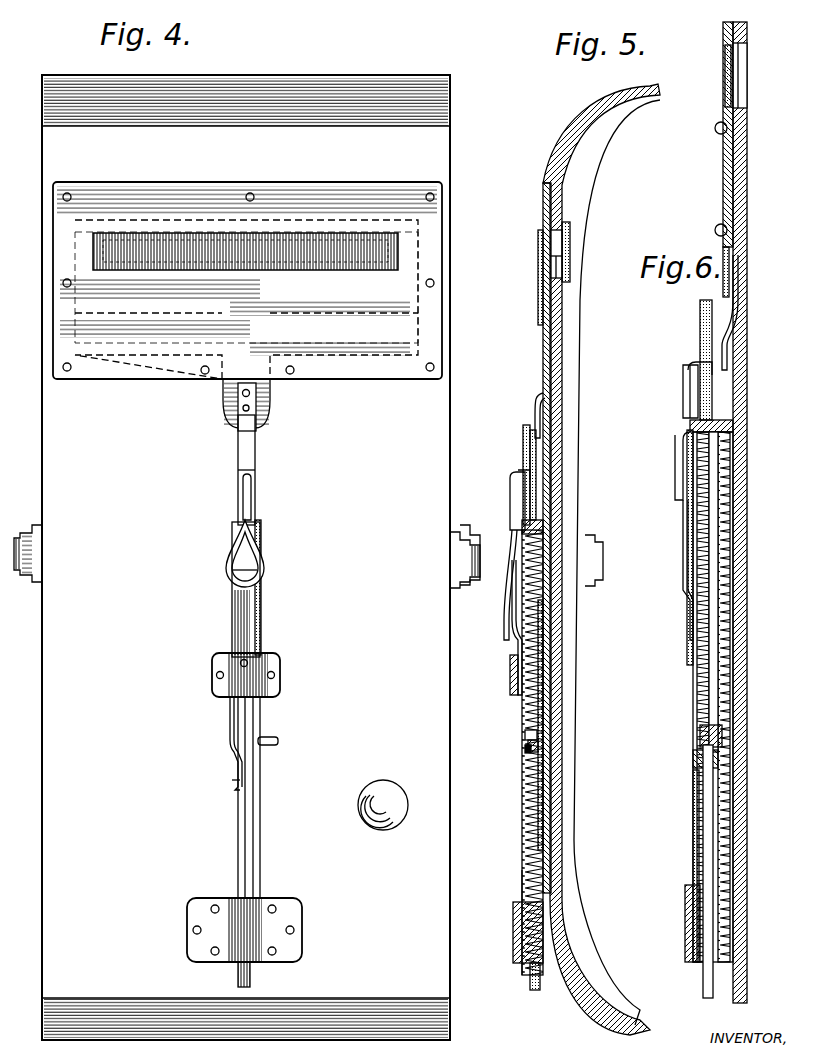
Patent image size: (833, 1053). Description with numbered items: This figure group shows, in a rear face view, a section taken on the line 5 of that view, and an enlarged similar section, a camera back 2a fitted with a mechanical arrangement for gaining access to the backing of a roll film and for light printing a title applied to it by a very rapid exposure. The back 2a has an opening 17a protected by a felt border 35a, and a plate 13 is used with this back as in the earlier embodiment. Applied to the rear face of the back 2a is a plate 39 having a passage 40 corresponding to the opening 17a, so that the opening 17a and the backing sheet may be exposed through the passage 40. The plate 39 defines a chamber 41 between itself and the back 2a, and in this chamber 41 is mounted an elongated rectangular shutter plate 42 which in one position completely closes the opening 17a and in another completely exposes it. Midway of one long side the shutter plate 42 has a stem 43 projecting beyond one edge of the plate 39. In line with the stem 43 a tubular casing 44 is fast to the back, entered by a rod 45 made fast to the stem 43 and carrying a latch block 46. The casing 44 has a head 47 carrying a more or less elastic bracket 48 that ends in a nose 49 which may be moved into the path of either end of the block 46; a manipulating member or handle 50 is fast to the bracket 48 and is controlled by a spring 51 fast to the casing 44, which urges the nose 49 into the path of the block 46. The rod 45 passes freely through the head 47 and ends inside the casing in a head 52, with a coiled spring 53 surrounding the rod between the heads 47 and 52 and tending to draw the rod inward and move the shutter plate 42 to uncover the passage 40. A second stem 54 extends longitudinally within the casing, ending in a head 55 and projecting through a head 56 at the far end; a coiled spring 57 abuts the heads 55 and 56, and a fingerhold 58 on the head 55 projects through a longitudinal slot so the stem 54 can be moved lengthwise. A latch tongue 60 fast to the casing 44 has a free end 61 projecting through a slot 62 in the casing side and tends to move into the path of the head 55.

In FIG. 4, the camera back 2a is at (247, 636).
In FIG. 5, the camera back 2a is at (555, 828).
In FIG. 6, the camera back 2a is at (737, 575).
In FIG. 4, the section line 5 is at (245, 125).
In FIG. 5, the plate 13 is at (570, 257).
In FIG. 4, the opening 17a is at (330, 268).
In FIG. 5, the opening 17a is at (552, 256).
In FIG. 6, the opening 17a is at (740, 95).
In FIG. 5, the felt border 35a is at (560, 235).
In FIG. 4, the plate 39 is at (143, 380).
In FIG. 5, the plate 39 is at (545, 360).
In FIG. 6, the plate 39 is at (723, 193).
In FIG. 4, the passage 40 is at (150, 236).
In FIG. 4, the chamber 41 is at (418, 345).
In FIG. 5, the chamber 41 is at (543, 342).
In FIG. 6, the chamber 41 is at (730, 240).
In FIG. 4, the shutter plate 42 is at (246, 299).
In FIG. 5, the shutter plate 42 is at (552, 263).
In FIG. 6, the shutter plate 42 is at (727, 108).
In FIG. 4, the stem 43 is at (224, 390).
In FIG. 5, the stem 43 is at (546, 415).
In FIG. 6, the stem 43 is at (738, 265).
In FIG. 4, the tubular casing 44 is at (250, 848).
In FIG. 5, the tubular casing 44 is at (522, 822).
In FIG. 6, the tubular casing 44 is at (693, 705).
In FIG. 5, the rod 45 is at (536, 503).
In FIG. 6, the rod 45 is at (732, 517).
In FIG. 4, the latch block 46 is at (248, 443).
In FIG. 5, the latch block 46 is at (523, 440).
In FIG. 6, the latch block 46 is at (712, 395).
In FIG. 4, the head 47 is at (258, 522).
In FIG. 5, the head 47 is at (540, 525).
In FIG. 6, the head 47 is at (733, 425).
In FIG. 4, the bracket 48 is at (255, 492).
In FIG. 5, the bracket 48 is at (512, 500).
In FIG. 6, the bracket 48 is at (683, 403).
In FIG. 4, the nose 49 is at (238, 470).
In FIG. 5, the nose 49 is at (520, 470).
In FIG. 6, the nose 49 is at (696, 362).
In FIG. 4, the manipulating member 50 is at (262, 566).
In FIG. 5, the manipulating member 50 is at (508, 560).
In FIG. 6, the manipulating member 50 is at (675, 468).
In FIG. 4, the spring 51 is at (250, 598).
In FIG. 5, the spring 51 is at (512, 612).
In FIG. 6, the spring 51 is at (683, 548).
In FIG. 5, the head 52 is at (525, 735).
In FIG. 6, the head 52 is at (725, 745).
In FIG. 4, the coiled spring 53 is at (246, 675).
In FIG. 5, the coiled spring 53 is at (545, 675).
In FIG. 6, the coiled spring 53 is at (733, 670).
In FIG. 4, the stem 54 is at (252, 975).
In FIG. 5, the stem 54 is at (530, 975).
In FIG. 6, the stem 54 is at (713, 840).
In FIG. 5, the head 55 is at (538, 745).
In FIG. 6, the head 55 is at (693, 760).
In FIG. 4, the head 56 is at (236, 964).
In FIG. 5, the head 56 is at (540, 970).
In FIG. 6, the head 56 is at (700, 965).
In FIG. 5, the coiled spring 57 is at (520, 870).
In FIG. 6, the coiled spring 57 is at (693, 875).
In FIG. 4, the fingerhold 58 is at (265, 745).
In FIG. 5, the fingerhold 58 is at (522, 748).
In FIG. 4, the latch tongue 60 is at (230, 715).
In FIG. 4, the free end 61 is at (230, 775).
In FIG. 4, the slot 62 is at (236, 790).